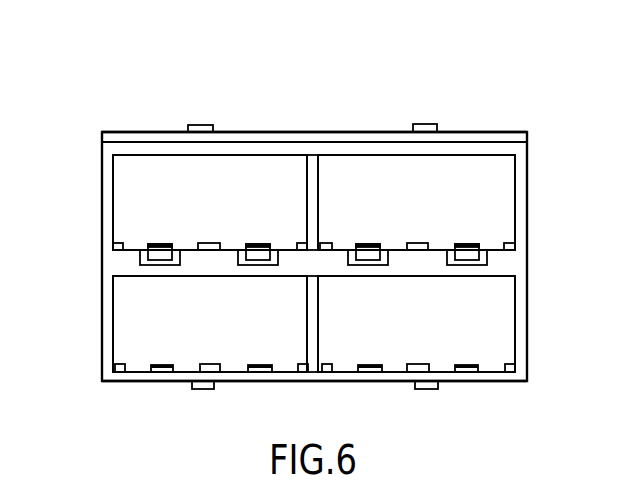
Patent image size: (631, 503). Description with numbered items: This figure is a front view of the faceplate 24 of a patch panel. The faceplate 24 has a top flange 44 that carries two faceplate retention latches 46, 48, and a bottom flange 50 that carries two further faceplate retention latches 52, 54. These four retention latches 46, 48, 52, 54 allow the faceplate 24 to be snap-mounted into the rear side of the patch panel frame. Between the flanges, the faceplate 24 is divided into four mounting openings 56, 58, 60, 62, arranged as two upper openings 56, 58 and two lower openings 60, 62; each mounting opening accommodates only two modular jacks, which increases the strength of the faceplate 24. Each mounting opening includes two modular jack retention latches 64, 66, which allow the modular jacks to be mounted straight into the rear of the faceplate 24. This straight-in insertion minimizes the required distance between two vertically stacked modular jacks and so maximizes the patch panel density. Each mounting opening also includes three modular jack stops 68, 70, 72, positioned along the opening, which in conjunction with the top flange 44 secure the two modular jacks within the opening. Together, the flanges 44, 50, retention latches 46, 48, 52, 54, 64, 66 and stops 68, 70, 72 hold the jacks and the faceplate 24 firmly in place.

The faceplate 24 is at (527, 173).
The top flange 44 is at (322, 132).
The faceplate retention latch 46 is at (199, 125).
The faceplate retention latch 48 is at (424, 124).
The bottom flange 50 is at (483, 380).
The faceplate retention latch 52 is at (202, 389).
The faceplate retention latch 54 is at (428, 389).
The mounting opening 56 is at (170, 173).
The mounting opening 58 is at (464, 178).
The mounting opening 60 is at (157, 327).
The mounting opening 62 is at (458, 310).
The modular jack retention latch 64 is at (160, 244).
The modular jack retention latch 66 is at (263, 244).
The modular jack stop 68 is at (113, 248).
The modular jack stop 70 is at (210, 243).
The modular jack stop 72 is at (300, 243).